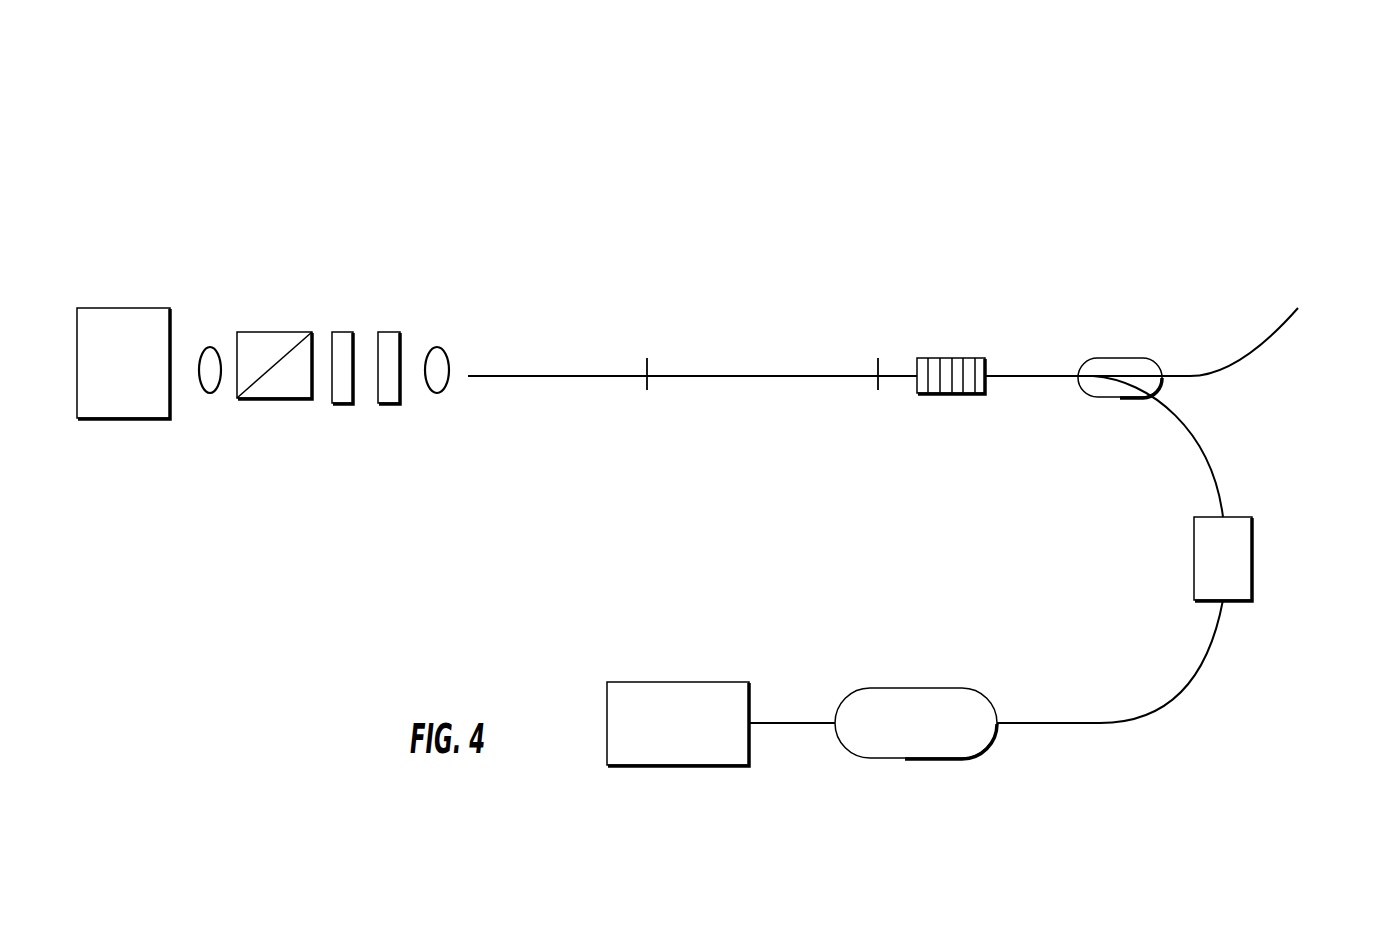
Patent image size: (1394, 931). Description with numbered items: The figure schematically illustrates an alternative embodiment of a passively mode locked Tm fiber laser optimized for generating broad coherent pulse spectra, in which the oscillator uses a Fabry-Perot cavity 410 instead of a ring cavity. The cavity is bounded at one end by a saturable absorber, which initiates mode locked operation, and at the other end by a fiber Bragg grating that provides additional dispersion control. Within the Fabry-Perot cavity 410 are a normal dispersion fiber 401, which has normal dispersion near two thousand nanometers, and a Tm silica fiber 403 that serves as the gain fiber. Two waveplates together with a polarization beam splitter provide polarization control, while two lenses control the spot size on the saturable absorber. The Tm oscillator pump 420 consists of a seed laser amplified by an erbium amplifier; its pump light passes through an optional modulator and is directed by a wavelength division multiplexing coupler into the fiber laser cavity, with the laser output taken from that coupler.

The Fabry-Perot cavity 410 is at (790, 108).
The Tm oscillator pump 420 is at (1014, 573).
The normal dispersion fiber 401 is at (589, 376).
The Tm silica fiber 403 is at (830, 376).